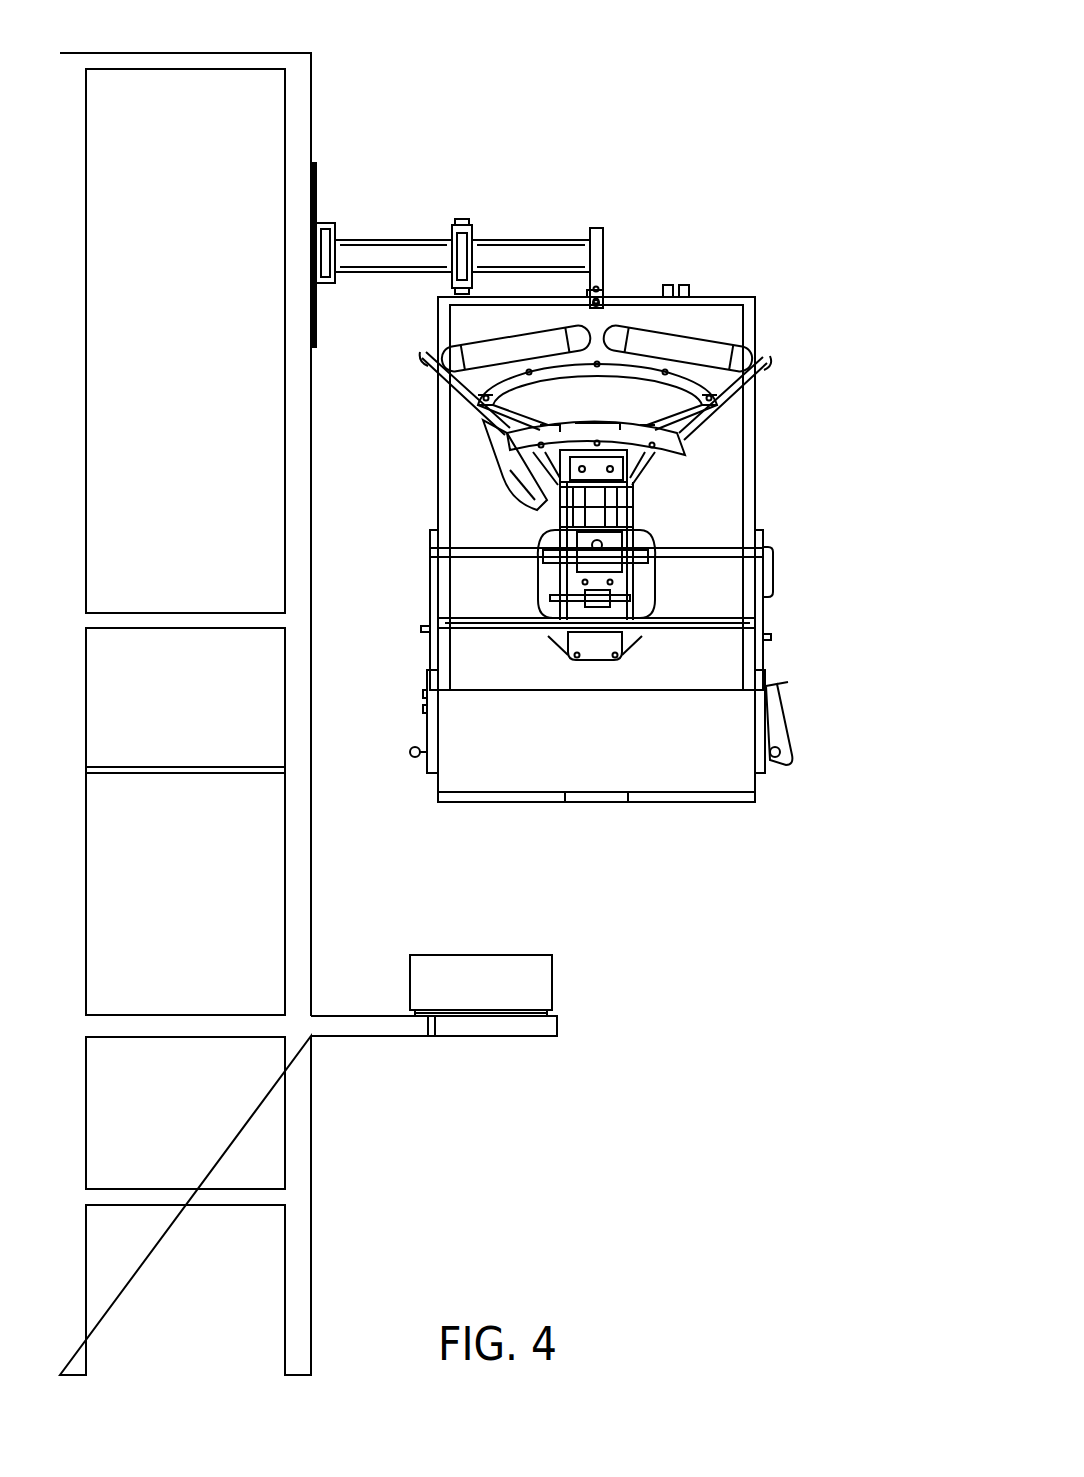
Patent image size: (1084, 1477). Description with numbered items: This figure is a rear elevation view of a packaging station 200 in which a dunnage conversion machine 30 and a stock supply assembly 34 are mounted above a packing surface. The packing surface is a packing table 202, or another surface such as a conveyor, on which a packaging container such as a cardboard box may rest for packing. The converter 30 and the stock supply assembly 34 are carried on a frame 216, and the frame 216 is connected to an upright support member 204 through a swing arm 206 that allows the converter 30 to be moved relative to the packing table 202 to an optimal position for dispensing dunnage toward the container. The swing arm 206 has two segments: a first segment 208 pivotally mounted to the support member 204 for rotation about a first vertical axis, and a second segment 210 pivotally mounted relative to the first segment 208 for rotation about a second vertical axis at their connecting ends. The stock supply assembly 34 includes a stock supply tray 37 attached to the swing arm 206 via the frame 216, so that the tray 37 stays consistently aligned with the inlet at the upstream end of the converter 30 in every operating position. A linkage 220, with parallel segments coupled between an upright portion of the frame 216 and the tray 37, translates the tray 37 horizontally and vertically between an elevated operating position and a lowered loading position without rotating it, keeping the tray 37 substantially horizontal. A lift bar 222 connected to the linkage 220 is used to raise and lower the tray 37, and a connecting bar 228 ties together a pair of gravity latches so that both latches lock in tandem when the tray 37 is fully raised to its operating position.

The packaging station 200 is at (426, 80).
The packing table 202 is at (356, 1030).
The support member 204 is at (298, 455).
The swing arm 206 is at (421, 212).
The first segment 208 is at (380, 258).
The second segment 210 is at (520, 258).
The frame 216 is at (748, 510).
The linkage 220 is at (800, 708).
The lift bar 222 is at (486, 553).
The connecting bar 228 is at (486, 676).
The dunnage conversion machine 30 is at (673, 443).
The stock supply assembly 34 is at (862, 724).
The stock supply tray 37 is at (635, 767).